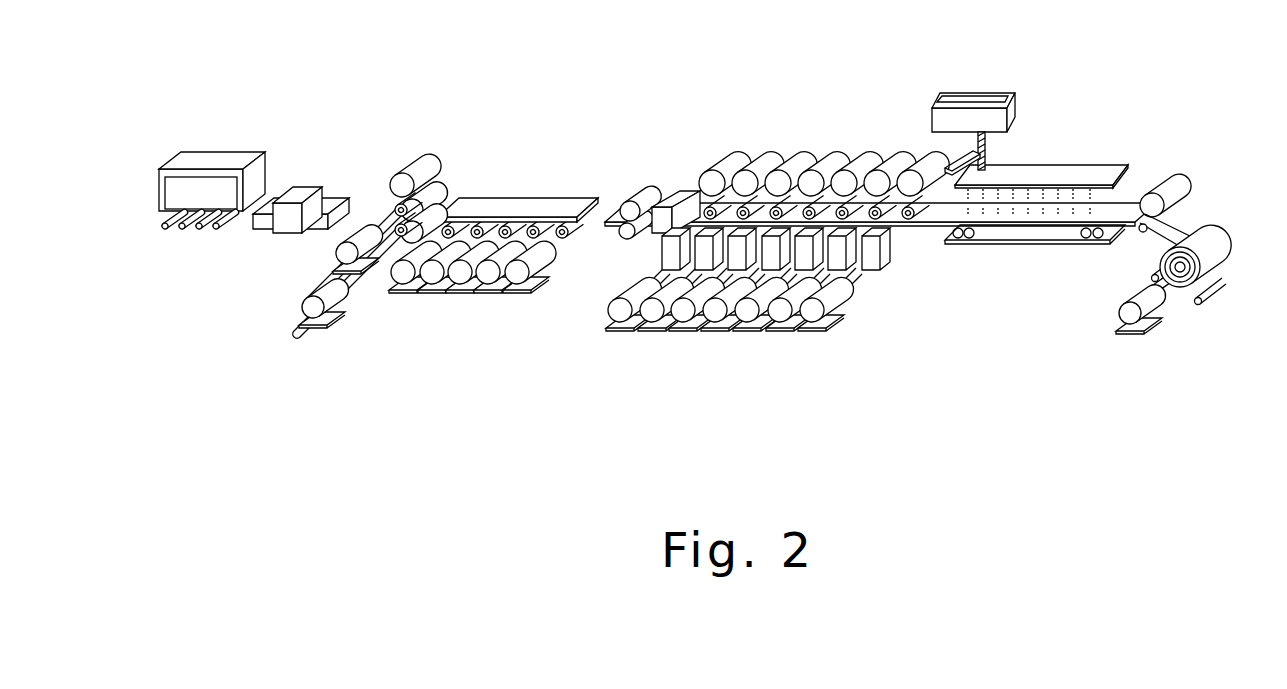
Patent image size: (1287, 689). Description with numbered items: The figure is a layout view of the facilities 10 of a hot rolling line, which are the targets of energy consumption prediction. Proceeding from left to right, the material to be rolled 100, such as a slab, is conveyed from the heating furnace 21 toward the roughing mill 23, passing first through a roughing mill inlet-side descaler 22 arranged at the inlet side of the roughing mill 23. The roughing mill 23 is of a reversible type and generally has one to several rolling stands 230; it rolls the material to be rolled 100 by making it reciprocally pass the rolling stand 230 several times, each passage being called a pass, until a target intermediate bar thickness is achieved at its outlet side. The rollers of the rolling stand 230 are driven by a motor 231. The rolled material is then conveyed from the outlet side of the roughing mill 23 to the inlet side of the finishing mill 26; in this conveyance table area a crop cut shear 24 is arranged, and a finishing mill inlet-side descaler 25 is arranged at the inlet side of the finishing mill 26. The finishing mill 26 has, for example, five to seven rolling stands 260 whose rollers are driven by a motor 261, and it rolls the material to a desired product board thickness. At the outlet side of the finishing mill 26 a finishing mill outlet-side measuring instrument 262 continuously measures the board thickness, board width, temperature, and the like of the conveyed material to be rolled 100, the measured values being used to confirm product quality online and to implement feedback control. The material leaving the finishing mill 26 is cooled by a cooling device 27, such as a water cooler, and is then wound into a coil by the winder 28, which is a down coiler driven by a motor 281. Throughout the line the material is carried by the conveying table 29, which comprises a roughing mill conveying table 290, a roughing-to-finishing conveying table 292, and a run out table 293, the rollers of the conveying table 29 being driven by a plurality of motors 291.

The facilities 10 is at (865, 368).
The heating furnace 21 is at (205, 160).
The roughing mill inlet-side descaler 22 is at (300, 193).
The roughing mill 23 is at (438, 140).
The crop cut shear 24 is at (640, 196).
The finishing mill inlet-side descaler 25 is at (672, 190).
The finishing mill 26 is at (903, 94).
The cooling device 27 is at (1047, 172).
The winder 28 is at (1222, 250).
The conveying table 29 is at (136, 272).
The material to be rolled 100 is at (333, 193).
The rolling stand 230 is at (420, 163).
The motor 231 is at (334, 261).
The rolling stand 260 is at (729, 172).
The motor 261 is at (612, 318).
The finishing mill outlet-side measuring instrument 262 is at (958, 153).
The motor 281 is at (1128, 320).
The roughing mill conveying table 290 is at (243, 230).
The motors 291 is at (188, 257).
The roughing-to-finishing conveying table 292 is at (558, 265).
The run out table 293 is at (1033, 256).